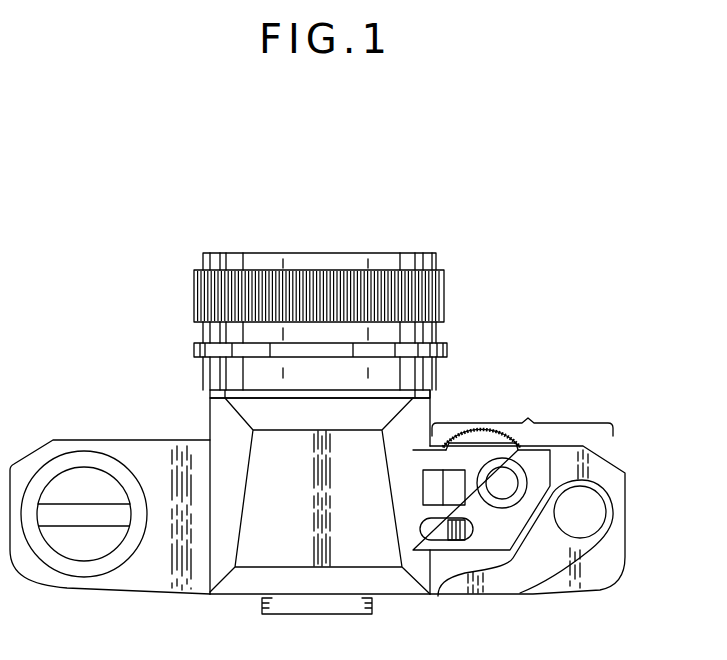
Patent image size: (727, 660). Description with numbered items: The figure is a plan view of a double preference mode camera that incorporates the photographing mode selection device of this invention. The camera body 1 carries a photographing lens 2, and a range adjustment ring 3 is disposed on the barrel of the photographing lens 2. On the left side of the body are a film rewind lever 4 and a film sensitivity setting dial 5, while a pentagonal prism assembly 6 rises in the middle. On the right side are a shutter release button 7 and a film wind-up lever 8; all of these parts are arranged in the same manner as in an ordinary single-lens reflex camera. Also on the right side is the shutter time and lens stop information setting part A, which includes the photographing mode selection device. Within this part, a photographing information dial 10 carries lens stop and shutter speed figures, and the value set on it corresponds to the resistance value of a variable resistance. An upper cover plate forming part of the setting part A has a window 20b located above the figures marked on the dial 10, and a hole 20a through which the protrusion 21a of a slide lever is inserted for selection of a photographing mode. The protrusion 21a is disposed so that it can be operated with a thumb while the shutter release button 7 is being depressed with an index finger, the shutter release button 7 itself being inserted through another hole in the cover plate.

The camera body 1 is at (145, 453).
The photographing lens 2 is at (337, 262).
The range adjustment ring 3 is at (430, 296).
The film rewind lever 4 is at (62, 515).
The film sensitivity setting dial 5 is at (107, 563).
The pentagonal prism assembly 6 is at (263, 553).
The shutter release button 7 is at (510, 483).
The film wind-up lever 8 is at (518, 585).
The photographing information dial 10 is at (480, 443).
The hole 20a is at (448, 520).
The window 20b is at (423, 486).
The protrusion 21a is at (450, 532).
The shutter time and lens stop information setting part A is at (522, 415).